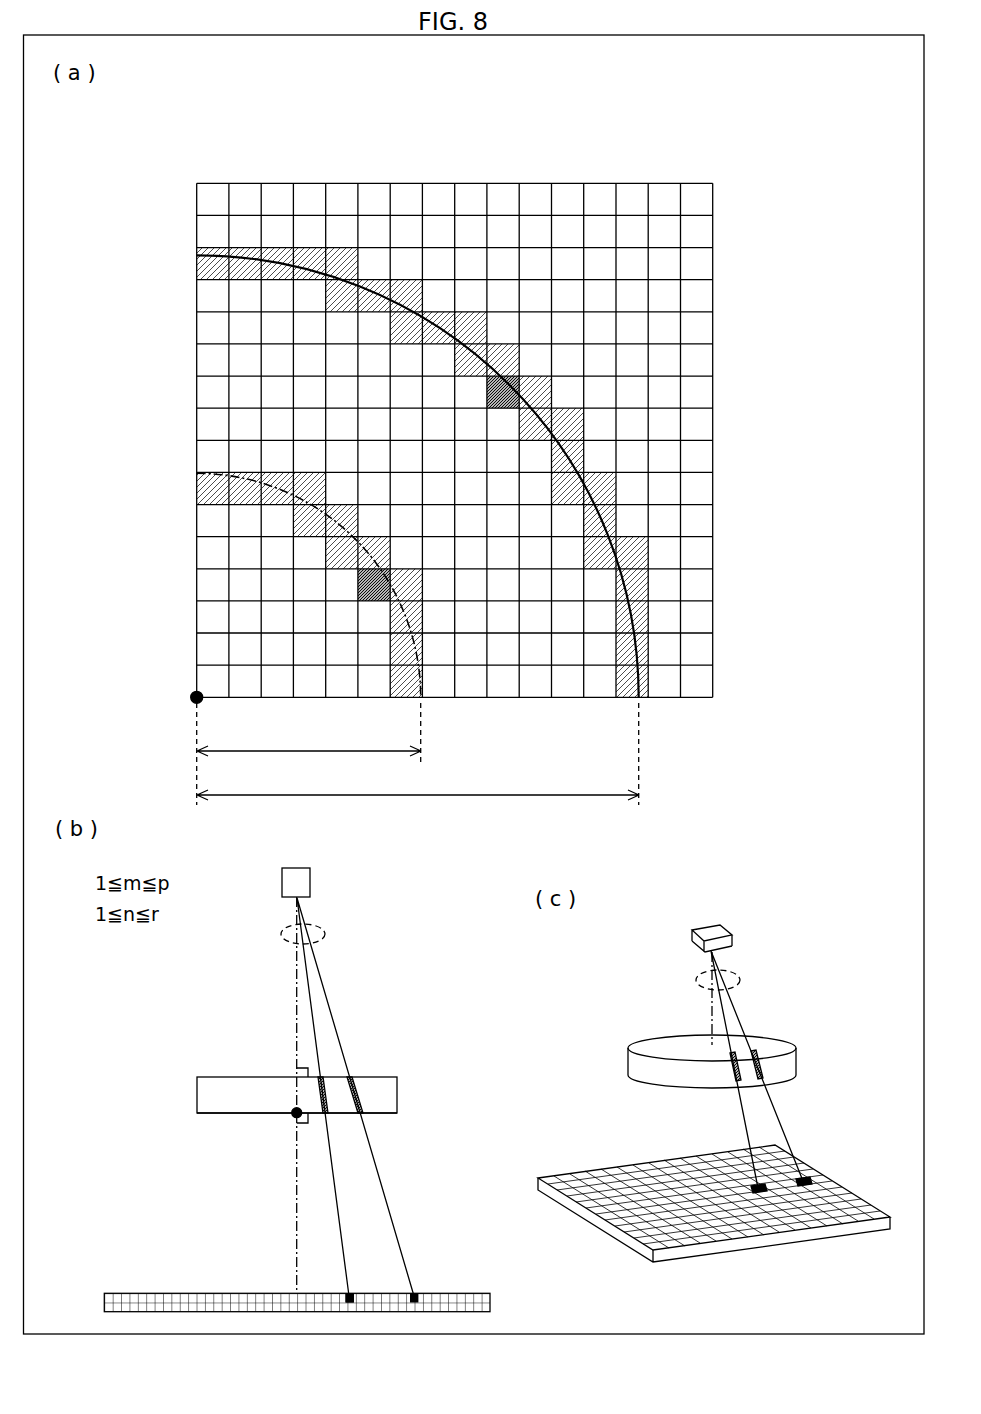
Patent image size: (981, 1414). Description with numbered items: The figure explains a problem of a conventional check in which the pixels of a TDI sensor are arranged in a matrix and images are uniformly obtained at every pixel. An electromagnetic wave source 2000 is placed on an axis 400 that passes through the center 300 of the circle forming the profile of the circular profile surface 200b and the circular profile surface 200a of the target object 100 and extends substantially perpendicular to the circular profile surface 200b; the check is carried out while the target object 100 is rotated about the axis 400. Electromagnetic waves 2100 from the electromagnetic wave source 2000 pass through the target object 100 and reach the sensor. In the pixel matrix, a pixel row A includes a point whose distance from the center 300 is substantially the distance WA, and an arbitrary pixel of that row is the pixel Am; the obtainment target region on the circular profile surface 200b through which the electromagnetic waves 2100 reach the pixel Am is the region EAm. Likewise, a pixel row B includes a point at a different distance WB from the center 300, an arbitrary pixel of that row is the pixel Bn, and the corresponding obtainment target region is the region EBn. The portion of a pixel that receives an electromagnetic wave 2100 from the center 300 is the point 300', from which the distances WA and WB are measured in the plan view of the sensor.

The point 300' is at (171, 687).
The pixel Bn is at (520, 378).
The pixel Am is at (390, 570).
The distance WA is at (309, 764).
The distance WB is at (418, 808).
The electromagnetic wave source 2000 is at (310, 882).
The electromagnetic waves 2100 is at (326, 930).
The circular profile surface 200a is at (375, 1077).
The circular profile surface 200b is at (380, 1113).
The target object 100 is at (457, 1081).
The center 300 is at (272, 1123).
The axis 400 is at (293, 1207).
The region EBn is at (361, 1113).
The region EAm is at (328, 1113).